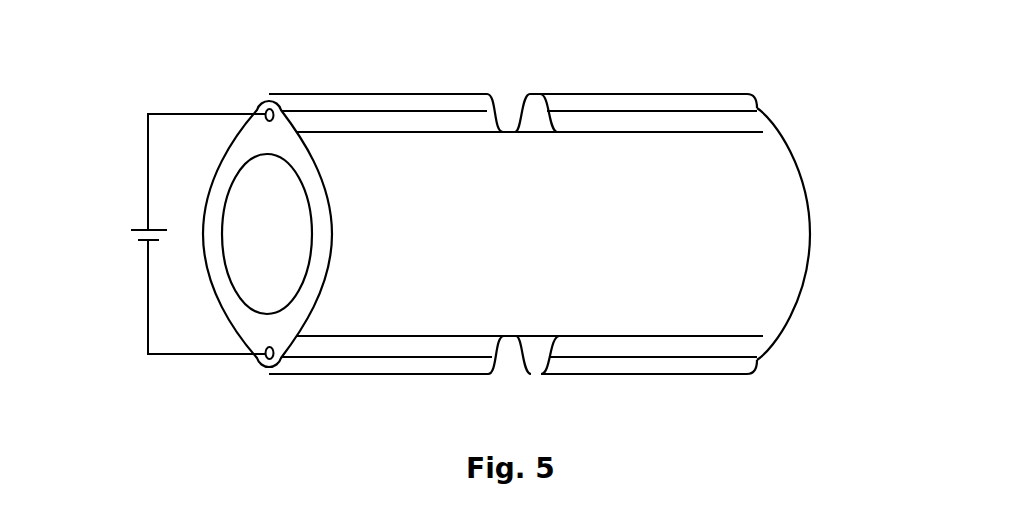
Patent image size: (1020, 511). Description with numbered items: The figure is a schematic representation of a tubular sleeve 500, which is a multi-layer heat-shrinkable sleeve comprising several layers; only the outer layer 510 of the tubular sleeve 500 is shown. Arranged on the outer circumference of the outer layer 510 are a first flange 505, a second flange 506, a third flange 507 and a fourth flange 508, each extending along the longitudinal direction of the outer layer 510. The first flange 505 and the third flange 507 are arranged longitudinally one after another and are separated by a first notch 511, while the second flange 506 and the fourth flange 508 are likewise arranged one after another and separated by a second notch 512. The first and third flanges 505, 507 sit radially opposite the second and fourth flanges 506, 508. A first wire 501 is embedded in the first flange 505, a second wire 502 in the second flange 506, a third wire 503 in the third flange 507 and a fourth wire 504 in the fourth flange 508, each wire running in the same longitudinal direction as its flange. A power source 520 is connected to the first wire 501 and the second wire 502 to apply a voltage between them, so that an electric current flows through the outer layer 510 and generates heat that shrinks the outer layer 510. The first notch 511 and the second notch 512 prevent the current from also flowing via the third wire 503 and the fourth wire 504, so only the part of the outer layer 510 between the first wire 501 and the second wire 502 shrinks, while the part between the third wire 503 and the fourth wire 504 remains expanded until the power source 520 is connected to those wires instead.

The tubular sleeve 500 is at (189, 63).
The first wire 501 is at (258, 112).
The second wire 502 is at (257, 360).
The third wire 503 is at (759, 103).
The fourth wire 504 is at (760, 367).
The first flange 505 is at (343, 107).
The second flange 506 is at (375, 367).
The third flange 507 is at (650, 102).
The fourth flange 508 is at (703, 367).
The outer layer 510 is at (767, 310).
The first notch 511 is at (507, 100).
The second notch 512 is at (513, 363).
The power source 520 is at (134, 252).